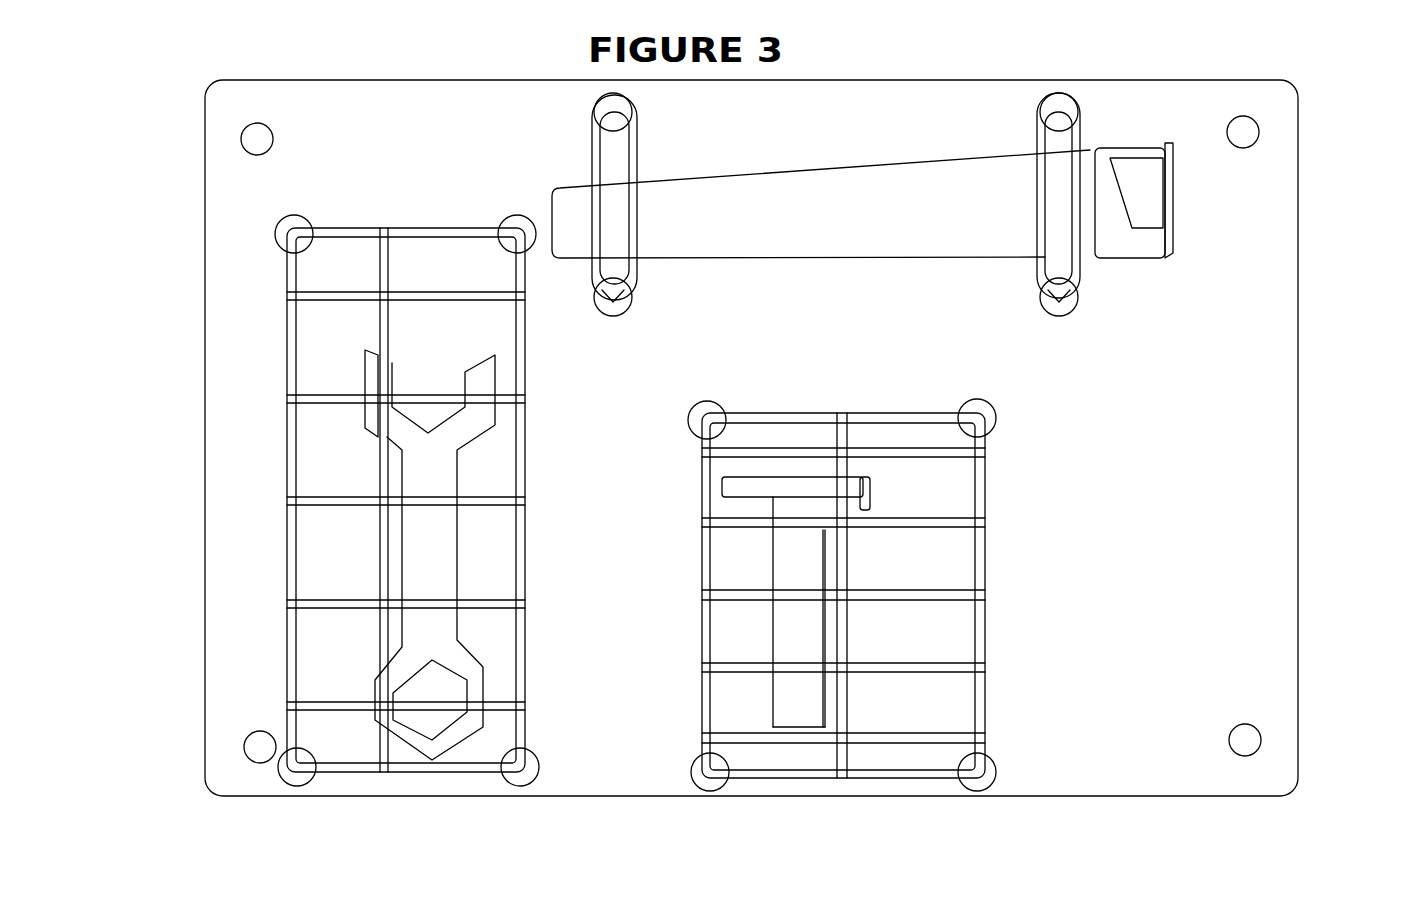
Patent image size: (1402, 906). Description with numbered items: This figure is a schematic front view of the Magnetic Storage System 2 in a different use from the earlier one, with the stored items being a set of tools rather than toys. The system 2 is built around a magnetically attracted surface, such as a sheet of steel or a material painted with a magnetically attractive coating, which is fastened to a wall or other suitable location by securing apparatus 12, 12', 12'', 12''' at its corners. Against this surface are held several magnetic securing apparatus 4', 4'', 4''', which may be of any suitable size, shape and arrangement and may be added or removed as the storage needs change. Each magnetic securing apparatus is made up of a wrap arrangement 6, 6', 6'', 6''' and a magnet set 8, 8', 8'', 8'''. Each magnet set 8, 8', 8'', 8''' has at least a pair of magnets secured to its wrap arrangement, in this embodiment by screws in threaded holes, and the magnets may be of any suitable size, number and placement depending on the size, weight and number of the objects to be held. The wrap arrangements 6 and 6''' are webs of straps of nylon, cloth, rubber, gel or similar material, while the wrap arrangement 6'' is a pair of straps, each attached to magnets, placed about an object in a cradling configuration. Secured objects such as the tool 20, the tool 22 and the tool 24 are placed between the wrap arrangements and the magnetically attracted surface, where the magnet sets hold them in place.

The Magnetic Storage System 2 is at (240, 73).
The magnetic securing apparatus 4' is at (571, 121).
The magnetic securing apparatus 4'' is at (1111, 111).
The magnetic securing apparatus 4''' is at (901, 441).
The wrap arrangement 6 is at (370, 500).
The wrap arrangement 6' is at (571, 197).
The wrap arrangement 6'' is at (1109, 204).
The wrap arrangement 6''' is at (845, 595).
The magnet set 8 is at (442, 500).
The magnet set 8' is at (677, 233).
The magnet set 8'' is at (994, 230).
The magnet set 8''' is at (786, 606).
The securing apparatus 12 is at (204, 139).
The securing apparatus 12' is at (201, 747).
The securing apparatus 12'' is at (1314, 132).
The securing apparatus 12''' is at (1315, 740).
The secured object 20 is at (418, 553).
The secured object 22 is at (852, 198).
The secured object 24 is at (797, 573).